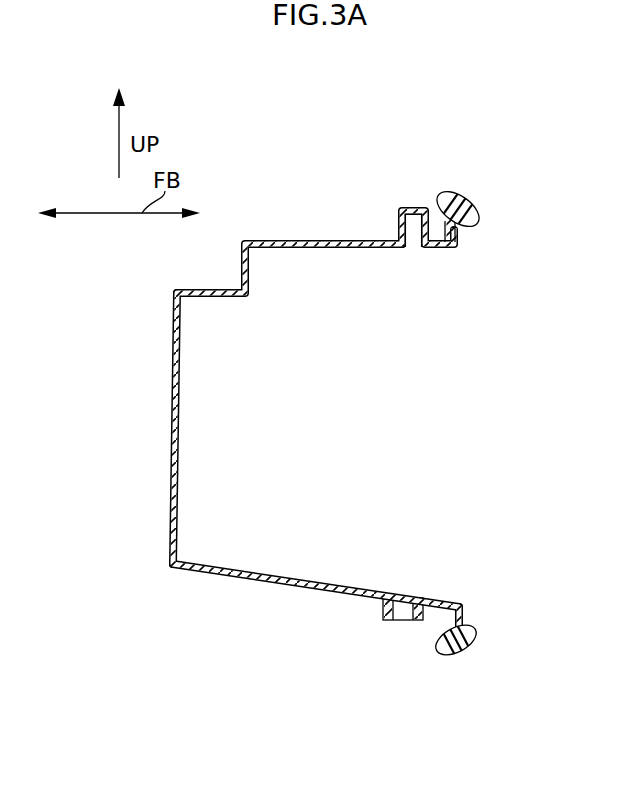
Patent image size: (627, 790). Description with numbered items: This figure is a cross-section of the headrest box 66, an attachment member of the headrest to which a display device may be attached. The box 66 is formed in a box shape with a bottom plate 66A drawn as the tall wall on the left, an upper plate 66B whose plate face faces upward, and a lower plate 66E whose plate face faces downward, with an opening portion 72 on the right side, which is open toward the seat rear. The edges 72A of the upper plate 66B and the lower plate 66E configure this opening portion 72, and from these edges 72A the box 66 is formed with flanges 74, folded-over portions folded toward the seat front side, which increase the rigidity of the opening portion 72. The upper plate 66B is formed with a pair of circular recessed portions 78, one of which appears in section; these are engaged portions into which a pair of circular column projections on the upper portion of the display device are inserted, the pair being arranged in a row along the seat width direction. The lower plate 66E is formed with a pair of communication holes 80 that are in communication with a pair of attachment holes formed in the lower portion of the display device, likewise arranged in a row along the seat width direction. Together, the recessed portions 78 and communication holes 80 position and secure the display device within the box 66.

The headrest box 66 is at (323, 150).
The bottom plate 66A is at (169, 404).
The upper plate 66B is at (329, 240).
The lower plate 66E is at (289, 585).
The opening portion 72 is at (447, 429).
The edges 72A is at (458, 252).
The flanges 74 is at (468, 202).
The recessed portions 78 is at (409, 238).
The communication holes 80 is at (403, 612).